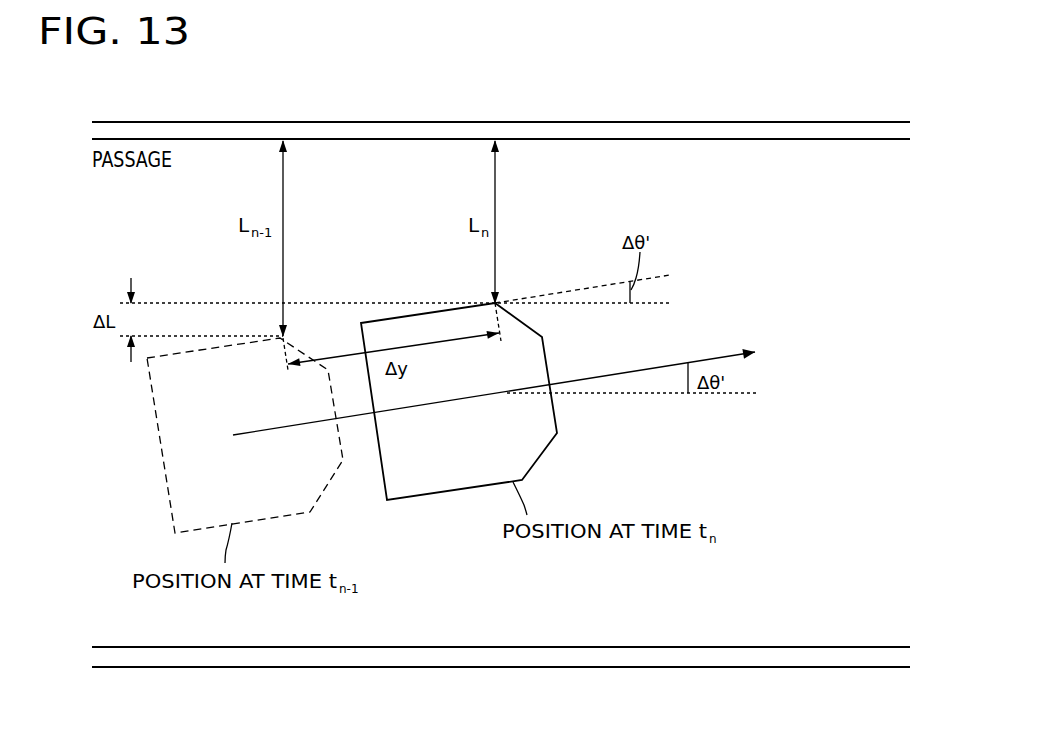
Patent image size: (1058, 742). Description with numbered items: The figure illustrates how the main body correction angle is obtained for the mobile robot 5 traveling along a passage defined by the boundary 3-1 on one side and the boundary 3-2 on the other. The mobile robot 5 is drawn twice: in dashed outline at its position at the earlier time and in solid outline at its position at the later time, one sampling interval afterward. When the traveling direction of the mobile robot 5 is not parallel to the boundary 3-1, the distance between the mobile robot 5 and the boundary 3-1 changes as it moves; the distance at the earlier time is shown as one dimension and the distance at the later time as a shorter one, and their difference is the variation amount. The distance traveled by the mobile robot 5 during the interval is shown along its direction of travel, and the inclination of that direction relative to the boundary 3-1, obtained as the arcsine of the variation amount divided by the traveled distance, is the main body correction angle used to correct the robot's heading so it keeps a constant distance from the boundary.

The boundary 3-1 is at (164, 121).
The boundary 3-2 is at (167, 668).
The mobile robot 5 is at (453, 492).